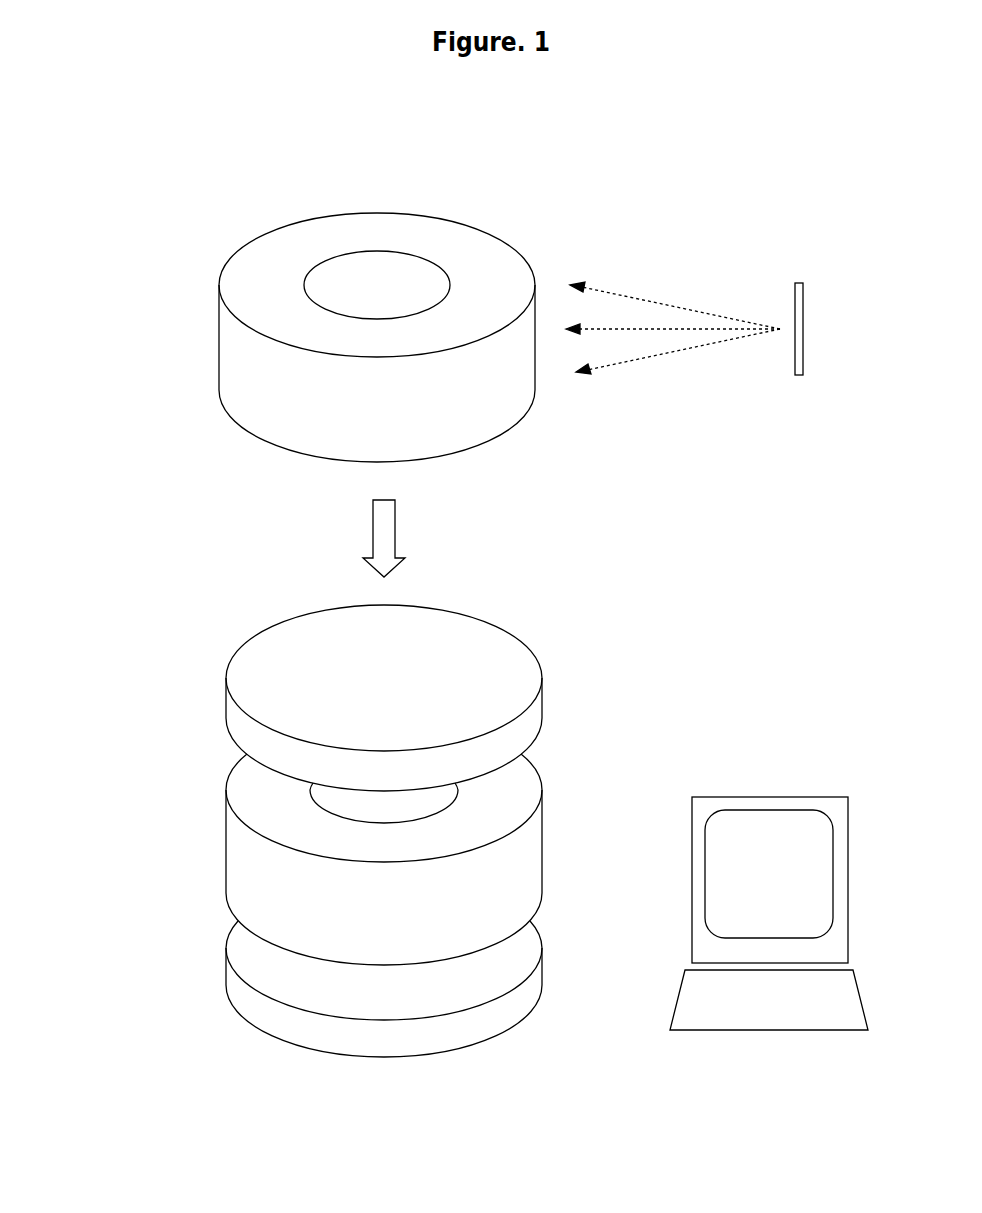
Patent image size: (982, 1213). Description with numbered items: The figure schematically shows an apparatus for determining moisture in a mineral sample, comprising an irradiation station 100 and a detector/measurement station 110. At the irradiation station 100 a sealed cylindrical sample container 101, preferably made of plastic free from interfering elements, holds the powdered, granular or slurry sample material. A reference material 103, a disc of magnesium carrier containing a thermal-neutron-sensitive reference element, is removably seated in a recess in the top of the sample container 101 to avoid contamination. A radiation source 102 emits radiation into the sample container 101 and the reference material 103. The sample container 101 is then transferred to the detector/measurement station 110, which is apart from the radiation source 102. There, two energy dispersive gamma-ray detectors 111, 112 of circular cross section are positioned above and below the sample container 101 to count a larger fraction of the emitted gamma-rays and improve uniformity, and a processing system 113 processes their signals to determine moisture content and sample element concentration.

The irradiation station 100 is at (438, 576).
The sample container 101 is at (380, 589).
The radiation source 102 is at (695, 348).
The reference material 103 is at (577, 806).
The detector/measurement station 110 is at (460, 831).
The gamma-ray detector 111 is at (384, 698).
The gamma-ray detector 112 is at (384, 989).
The processing system 113 is at (769, 913).